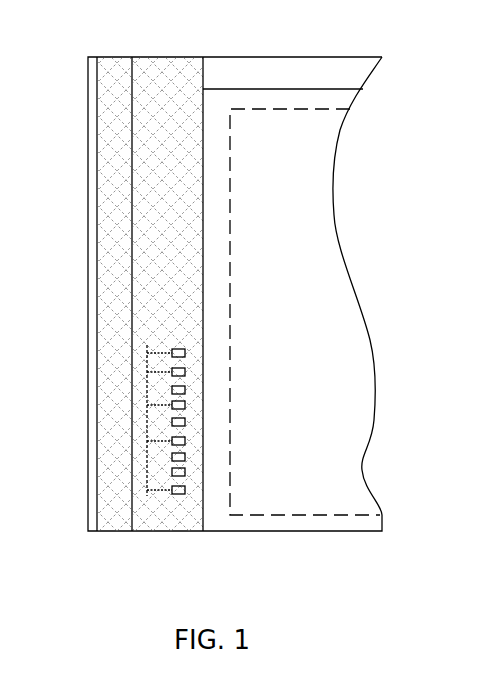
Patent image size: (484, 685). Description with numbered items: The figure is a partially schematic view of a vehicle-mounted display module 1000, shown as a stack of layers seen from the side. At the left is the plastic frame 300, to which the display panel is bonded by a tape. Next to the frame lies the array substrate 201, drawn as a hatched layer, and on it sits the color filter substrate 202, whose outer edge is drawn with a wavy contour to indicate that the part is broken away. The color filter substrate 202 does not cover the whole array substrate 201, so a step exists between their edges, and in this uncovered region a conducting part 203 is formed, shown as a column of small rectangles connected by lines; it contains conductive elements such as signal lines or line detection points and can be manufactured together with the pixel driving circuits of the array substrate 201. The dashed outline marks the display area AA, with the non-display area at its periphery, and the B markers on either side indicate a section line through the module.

The display module 1000 is at (55, 475).
The plastic frame 300 is at (115, 503).
The conducting part 203 is at (158, 505).
The array substrate 201 is at (187, 520).
The color filter substrate 202 is at (285, 523).
The display area AA is at (330, 515).
The section line B- B is at (73, 410).